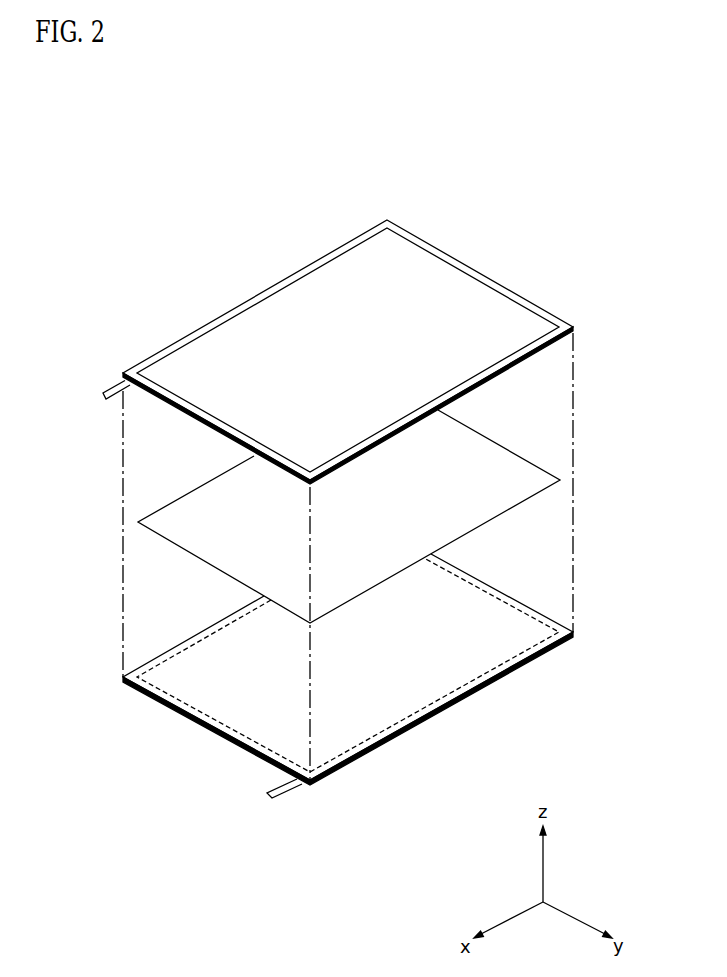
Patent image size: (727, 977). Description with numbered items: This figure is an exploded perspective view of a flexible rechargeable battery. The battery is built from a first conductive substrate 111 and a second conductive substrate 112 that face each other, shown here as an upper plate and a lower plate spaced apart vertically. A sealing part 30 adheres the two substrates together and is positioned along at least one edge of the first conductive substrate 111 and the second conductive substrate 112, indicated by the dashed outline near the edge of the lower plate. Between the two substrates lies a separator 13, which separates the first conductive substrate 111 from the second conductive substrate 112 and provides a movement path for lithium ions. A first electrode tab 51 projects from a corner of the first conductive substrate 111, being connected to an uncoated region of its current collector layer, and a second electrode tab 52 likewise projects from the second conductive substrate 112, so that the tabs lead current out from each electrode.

The first conductive substrate 111 is at (519, 280).
The second conductive substrate 112 is at (592, 649).
The separator 13 is at (562, 461).
The sealing part 30 is at (500, 670).
The first electrode tab 51 is at (103, 391).
The second electrode tab 52 is at (270, 793).